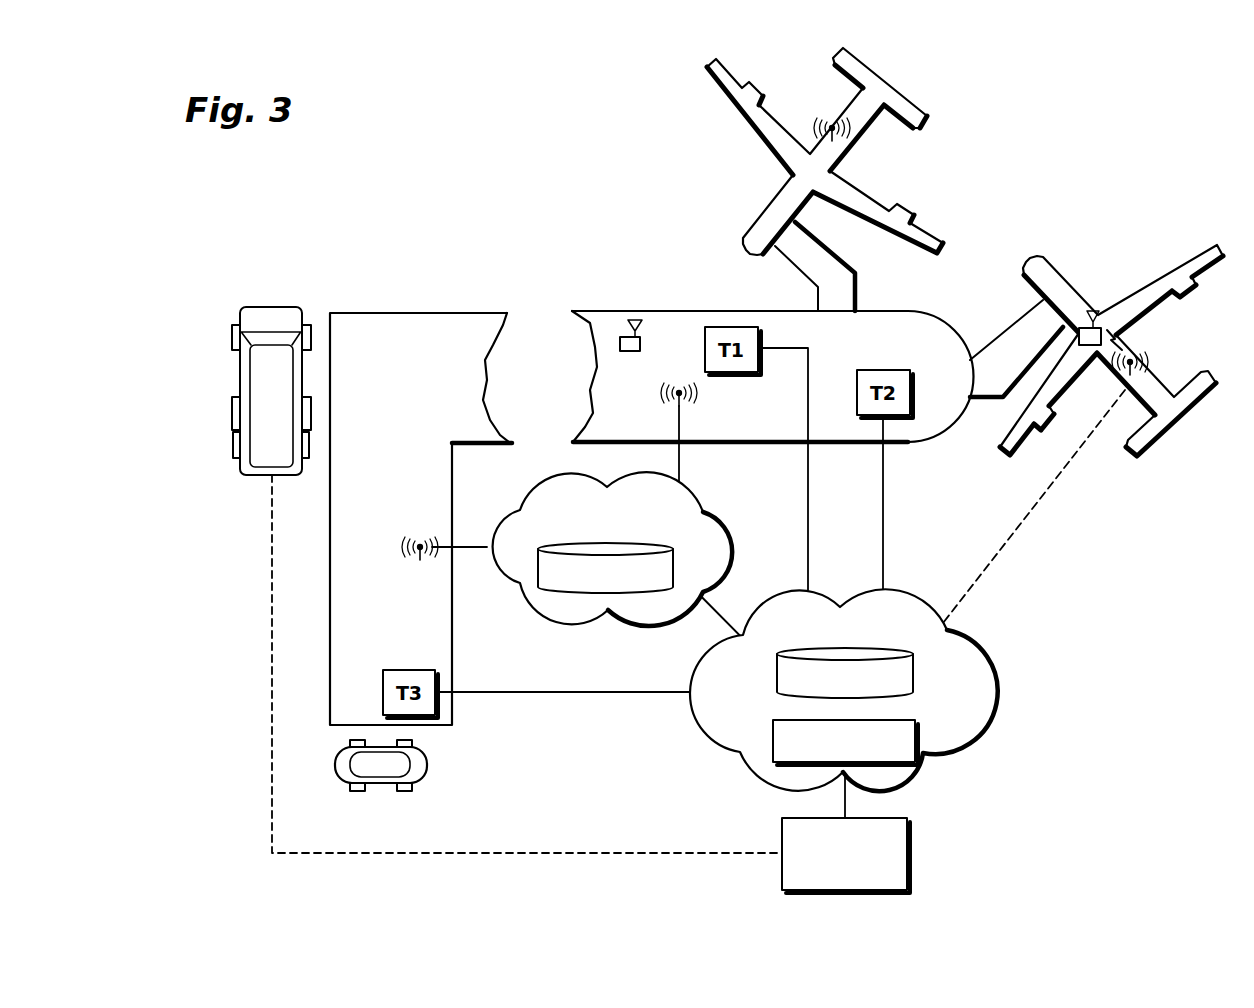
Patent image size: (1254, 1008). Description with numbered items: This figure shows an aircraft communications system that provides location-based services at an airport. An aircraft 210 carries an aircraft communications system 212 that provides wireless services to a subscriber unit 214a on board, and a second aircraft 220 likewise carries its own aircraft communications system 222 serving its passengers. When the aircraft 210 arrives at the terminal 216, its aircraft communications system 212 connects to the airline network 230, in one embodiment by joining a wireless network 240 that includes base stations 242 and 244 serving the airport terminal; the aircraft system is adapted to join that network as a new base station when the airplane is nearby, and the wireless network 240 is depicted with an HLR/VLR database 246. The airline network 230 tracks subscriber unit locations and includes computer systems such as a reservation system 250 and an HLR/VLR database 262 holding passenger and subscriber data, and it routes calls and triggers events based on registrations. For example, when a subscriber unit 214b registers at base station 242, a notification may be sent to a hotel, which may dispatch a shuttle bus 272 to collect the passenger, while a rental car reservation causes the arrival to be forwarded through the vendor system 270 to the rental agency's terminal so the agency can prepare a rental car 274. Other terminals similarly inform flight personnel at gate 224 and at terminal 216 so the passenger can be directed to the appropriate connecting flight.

The aircraft 210 is at (1070, 277).
The aircraft communications system 212 is at (1147, 362).
The subscriber unit 214a is at (1100, 309).
The subscriber unit 214b is at (635, 318).
The terminal 216 is at (980, 358).
The aircraft 220 is at (783, 186).
The aircraft communications system 222 is at (848, 132).
The gate 224 is at (857, 275).
The airline network 230 is at (747, 772).
The wireless network 240 is at (542, 483).
The base station 242 is at (660, 395).
The base station 244 is at (402, 545).
The HLR/VLR database 246 is at (605, 593).
The reservation system 250 is at (925, 753).
The HLR/VLR database 262 is at (915, 675).
The vendor system 270 is at (908, 852).
The shuttle bus 272 is at (272, 307).
The rental car 274 is at (427, 762).